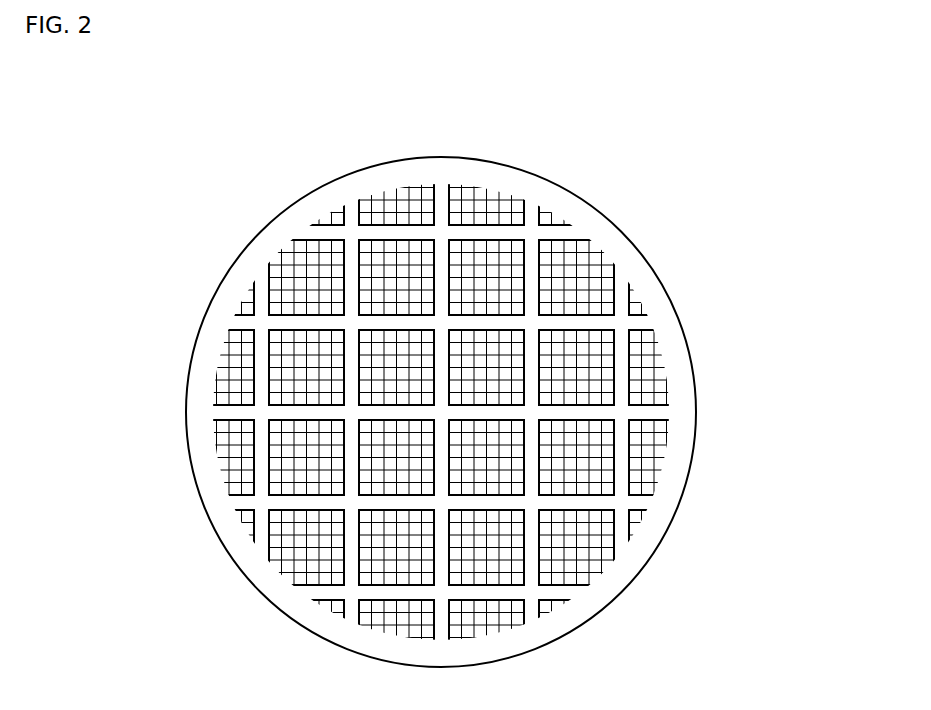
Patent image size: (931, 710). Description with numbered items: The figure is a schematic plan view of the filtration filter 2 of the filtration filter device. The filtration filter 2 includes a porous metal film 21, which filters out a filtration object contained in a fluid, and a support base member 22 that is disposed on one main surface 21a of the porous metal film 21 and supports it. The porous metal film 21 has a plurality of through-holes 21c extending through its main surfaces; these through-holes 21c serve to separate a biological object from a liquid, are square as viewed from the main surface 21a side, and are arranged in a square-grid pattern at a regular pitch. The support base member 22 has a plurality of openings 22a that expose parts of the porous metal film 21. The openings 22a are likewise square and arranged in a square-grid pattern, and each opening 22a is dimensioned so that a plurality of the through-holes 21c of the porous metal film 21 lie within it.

The filtration filter 2 is at (188, 140).
The porous metal film 21 is at (653, 373).
The main surface 21a is at (627, 221).
The through-holes 21c is at (645, 450).
The support base member 22 is at (640, 323).
The openings 22a is at (492, 236).